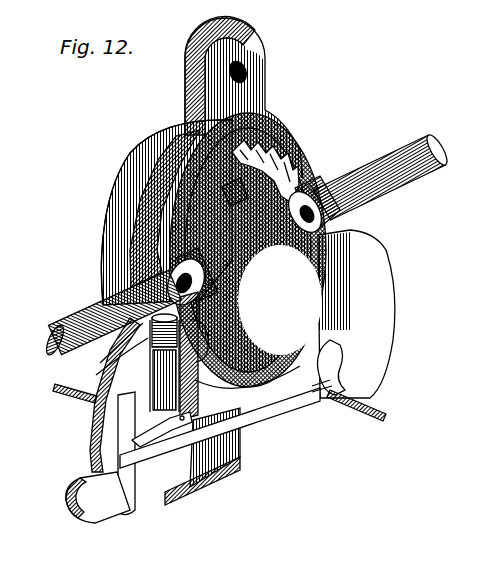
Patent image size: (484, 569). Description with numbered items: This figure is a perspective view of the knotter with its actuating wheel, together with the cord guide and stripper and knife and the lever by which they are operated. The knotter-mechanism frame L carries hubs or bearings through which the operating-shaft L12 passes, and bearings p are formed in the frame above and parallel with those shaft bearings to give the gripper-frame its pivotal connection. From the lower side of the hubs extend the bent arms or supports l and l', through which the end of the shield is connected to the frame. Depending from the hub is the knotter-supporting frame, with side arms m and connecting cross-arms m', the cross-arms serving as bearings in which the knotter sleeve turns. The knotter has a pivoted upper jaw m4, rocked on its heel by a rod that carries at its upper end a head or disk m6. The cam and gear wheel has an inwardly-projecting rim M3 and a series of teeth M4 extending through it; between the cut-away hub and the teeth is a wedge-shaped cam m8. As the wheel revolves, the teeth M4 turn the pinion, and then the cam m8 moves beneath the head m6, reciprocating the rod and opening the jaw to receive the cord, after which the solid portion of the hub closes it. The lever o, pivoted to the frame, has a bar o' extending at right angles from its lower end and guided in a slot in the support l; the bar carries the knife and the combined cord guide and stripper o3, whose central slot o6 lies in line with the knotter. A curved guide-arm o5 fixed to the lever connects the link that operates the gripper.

The knotter-mechanism frame L is at (252, 98).
The operating-shaft L12 is at (382, 176).
The inwardly-projecting rim M3 is at (100, 239).
The teeth M4 is at (280, 152).
The bearings p is at (318, 192).
The wedge-shaped cam m8 is at (242, 200).
The upper jaw m4 is at (222, 255).
The lever o is at (292, 360).
The head or disk m6 is at (200, 333).
The cross-arms m' is at (157, 336).
The side arms m is at (176, 356).
The combined cord guide and stripper o3 is at (58, 392).
The central slot o6 is at (150, 415).
The bent arm or support l is at (197, 416).
The bent arm or support l' is at (330, 367).
The curved guide-arm o5 is at (356, 403).
The bar o' is at (98, 502).